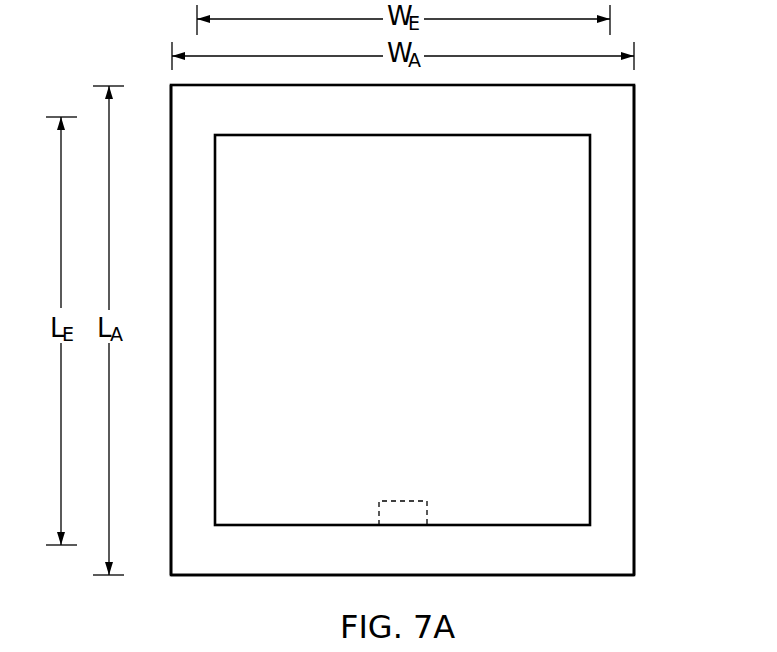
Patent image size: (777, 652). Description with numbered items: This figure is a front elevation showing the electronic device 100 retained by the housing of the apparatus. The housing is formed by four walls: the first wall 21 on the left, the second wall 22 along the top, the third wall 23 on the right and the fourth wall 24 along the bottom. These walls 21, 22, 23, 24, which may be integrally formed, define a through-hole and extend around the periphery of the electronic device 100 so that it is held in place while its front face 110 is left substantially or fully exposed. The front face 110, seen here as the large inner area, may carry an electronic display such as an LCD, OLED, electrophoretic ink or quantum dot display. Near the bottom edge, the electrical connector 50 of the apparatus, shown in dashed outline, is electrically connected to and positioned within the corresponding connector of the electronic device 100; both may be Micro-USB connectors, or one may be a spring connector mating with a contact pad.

The electronic device 100 is at (548, 210).
The front face 110 is at (420, 342).
The first wall 21 is at (192, 229).
The second wall 22 is at (512, 108).
The third wall 23 is at (608, 273).
The fourth wall 24 is at (503, 556).
The electrical connector 50 is at (427, 512).